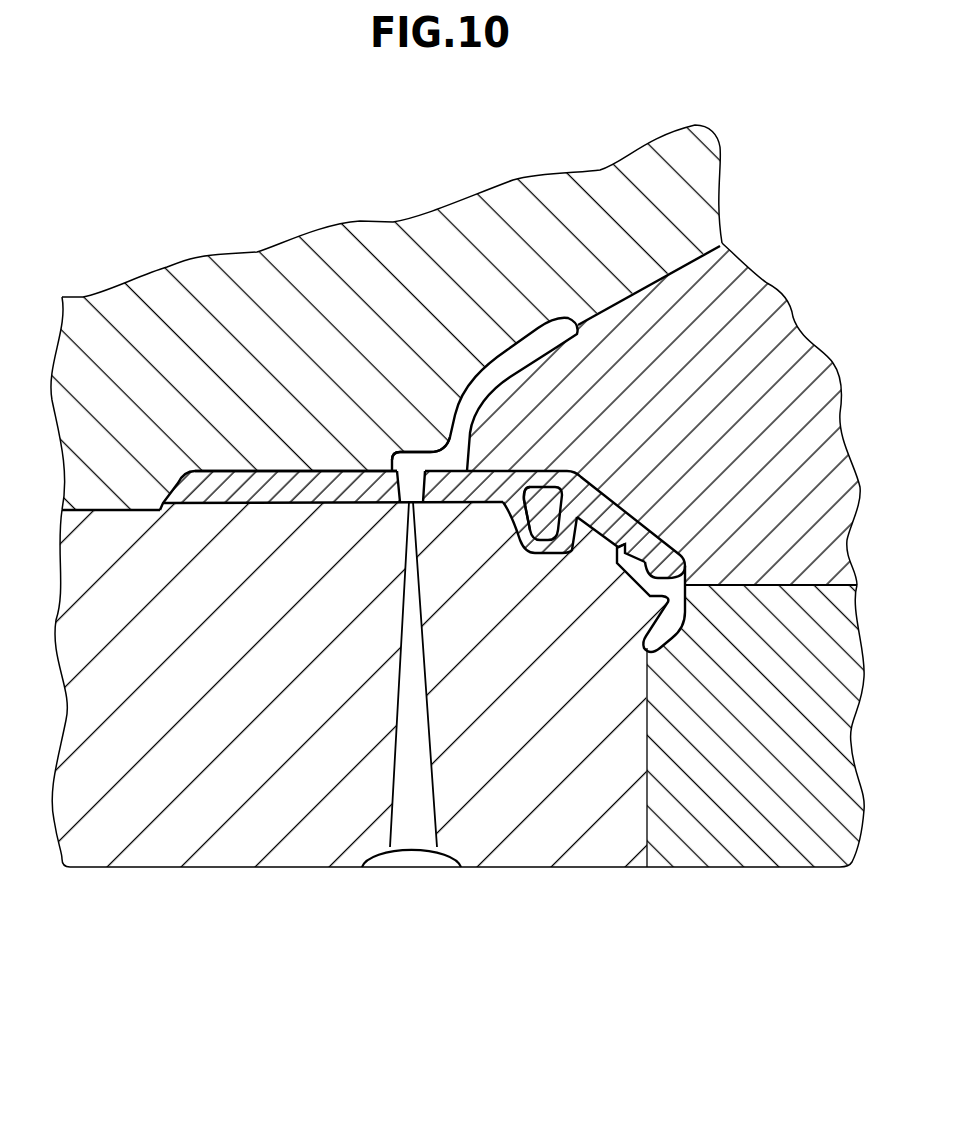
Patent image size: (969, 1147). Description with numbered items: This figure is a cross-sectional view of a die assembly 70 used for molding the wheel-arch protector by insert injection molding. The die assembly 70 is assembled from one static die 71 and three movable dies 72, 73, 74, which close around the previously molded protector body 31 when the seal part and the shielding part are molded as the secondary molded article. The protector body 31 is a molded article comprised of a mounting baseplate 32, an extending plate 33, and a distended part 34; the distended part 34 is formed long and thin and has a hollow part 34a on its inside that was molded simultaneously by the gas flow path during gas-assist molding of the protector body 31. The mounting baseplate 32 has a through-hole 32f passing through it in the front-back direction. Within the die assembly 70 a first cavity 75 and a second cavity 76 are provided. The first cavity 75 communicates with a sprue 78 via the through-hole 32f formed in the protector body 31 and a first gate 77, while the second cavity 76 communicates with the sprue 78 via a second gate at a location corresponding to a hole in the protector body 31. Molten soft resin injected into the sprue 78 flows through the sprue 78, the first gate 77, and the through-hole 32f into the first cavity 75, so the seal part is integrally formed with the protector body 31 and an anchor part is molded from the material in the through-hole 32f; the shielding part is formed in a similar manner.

The die assembly 70 is at (94, 881).
The static die 71 is at (160, 854).
The movable die 72 is at (97, 327).
The movable die 73 is at (770, 300).
The movable die 74 is at (763, 845).
The first cavity 75 is at (530, 345).
The second cavity 76 is at (660, 640).
The first gate 77 is at (411, 450).
The sprue 78 is at (410, 827).
The protector body 31 is at (248, 474).
The mounting baseplate 32 is at (328, 482).
The through-hole 32f is at (404, 495).
The extending plate 33 is at (613, 535).
The distended part 34 is at (553, 553).
The hollow part 34a is at (543, 517).